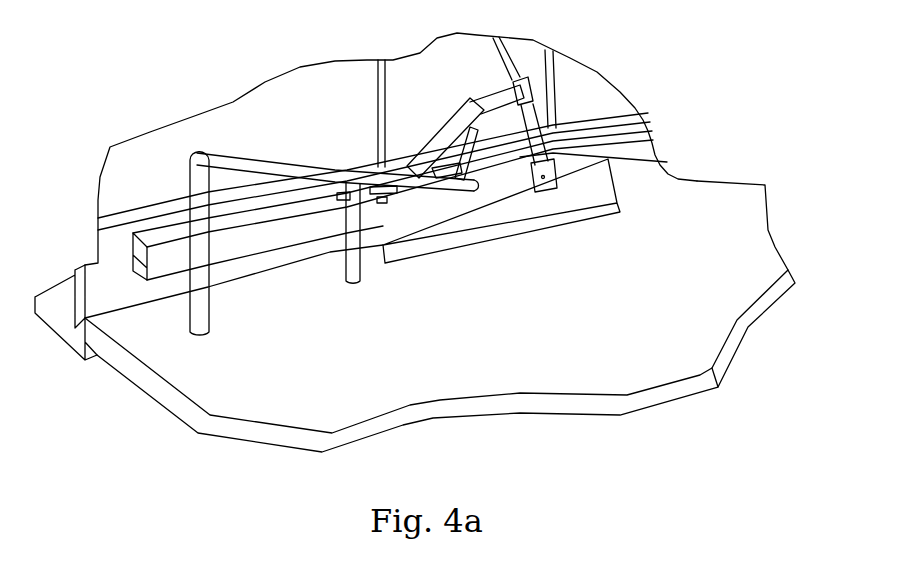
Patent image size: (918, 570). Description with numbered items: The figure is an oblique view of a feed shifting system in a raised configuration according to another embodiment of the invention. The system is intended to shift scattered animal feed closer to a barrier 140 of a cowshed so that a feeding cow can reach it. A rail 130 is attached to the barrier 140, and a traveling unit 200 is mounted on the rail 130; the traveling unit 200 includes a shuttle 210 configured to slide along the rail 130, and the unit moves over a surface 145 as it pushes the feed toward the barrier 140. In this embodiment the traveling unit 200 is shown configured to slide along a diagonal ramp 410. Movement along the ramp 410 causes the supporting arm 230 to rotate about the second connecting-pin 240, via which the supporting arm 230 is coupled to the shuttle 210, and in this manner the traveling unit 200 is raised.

The rail 130 is at (132, 262).
The barrier 140 is at (133, 218).
The surface 145 is at (692, 205).
The traveling unit 200 is at (522, 272).
The shuttle 210 is at (425, 204).
The supporting arm 230 is at (462, 116).
The second connecting-pin 240 is at (386, 200).
The diagonal ramp 410 is at (330, 166).